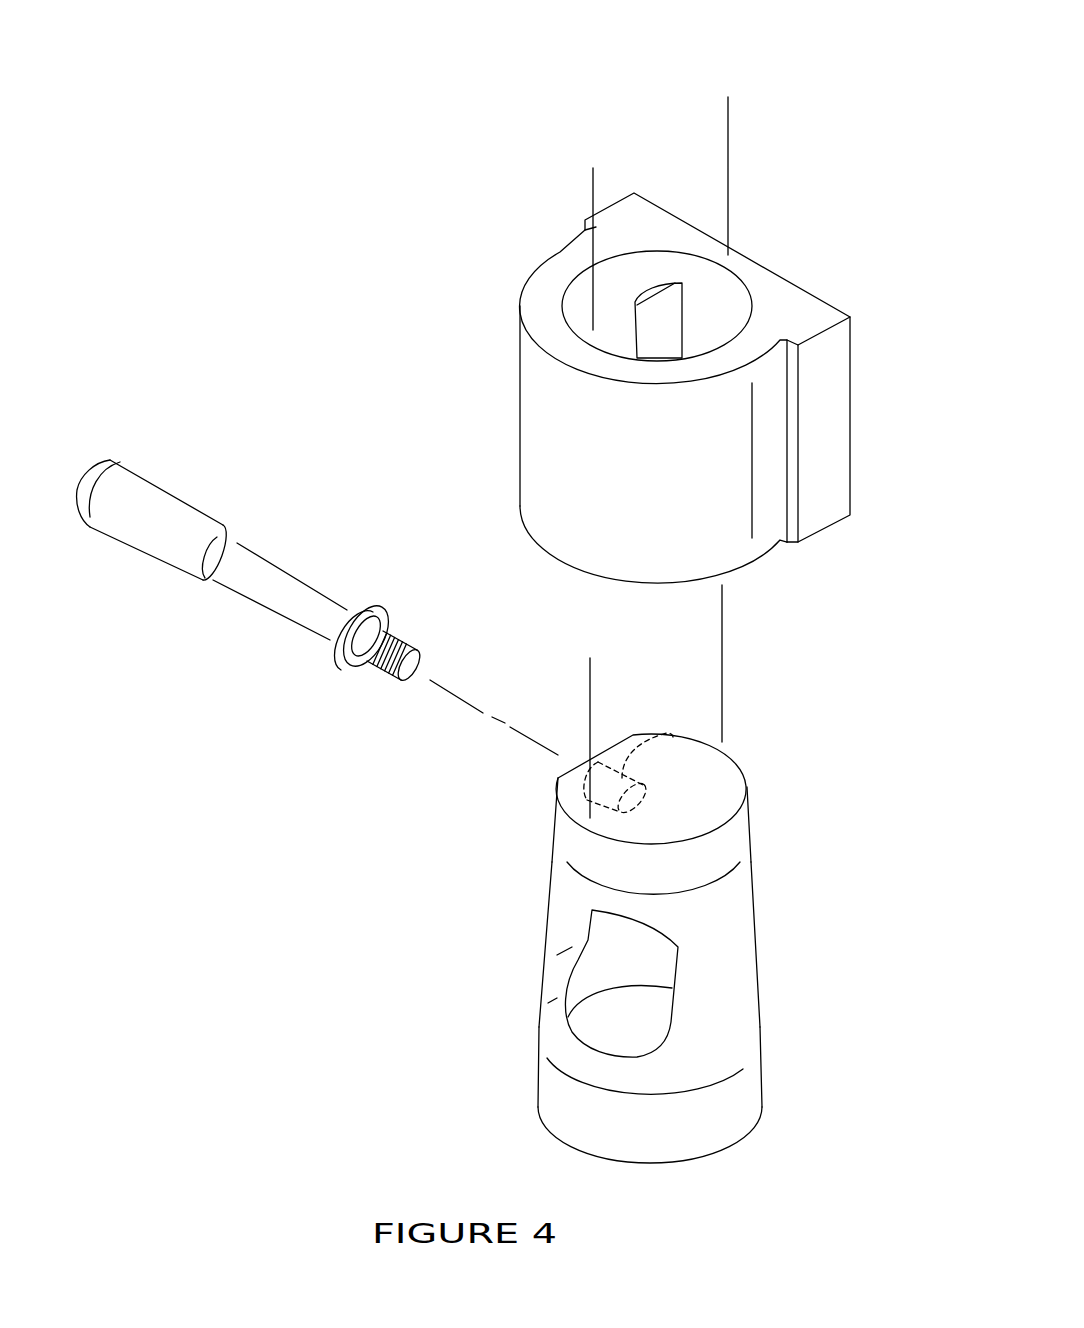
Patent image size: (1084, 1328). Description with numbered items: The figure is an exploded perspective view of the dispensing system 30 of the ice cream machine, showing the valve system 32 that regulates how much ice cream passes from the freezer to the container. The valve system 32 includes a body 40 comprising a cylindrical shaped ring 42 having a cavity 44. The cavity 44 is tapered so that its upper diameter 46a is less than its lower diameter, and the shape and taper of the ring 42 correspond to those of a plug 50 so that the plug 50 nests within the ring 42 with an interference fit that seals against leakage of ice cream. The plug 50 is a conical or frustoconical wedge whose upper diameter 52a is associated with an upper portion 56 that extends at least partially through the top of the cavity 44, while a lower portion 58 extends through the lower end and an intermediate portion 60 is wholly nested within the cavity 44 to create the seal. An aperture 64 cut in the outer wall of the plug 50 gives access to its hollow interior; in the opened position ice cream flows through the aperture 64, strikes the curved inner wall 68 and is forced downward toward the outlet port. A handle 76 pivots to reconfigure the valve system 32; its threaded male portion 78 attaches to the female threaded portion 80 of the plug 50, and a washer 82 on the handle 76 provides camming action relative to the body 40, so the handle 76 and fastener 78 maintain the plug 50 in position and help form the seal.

The dispensing system 30 is at (788, 95).
The valve system 32 is at (770, 208).
The body 40 is at (777, 545).
The ring 42 is at (555, 267).
The cavity 44 is at (645, 280).
The upper diameter 46a is at (727, 110).
The plug 50 is at (755, 953).
The upper diameter 52a is at (722, 598).
The upper portion 56 is at (753, 838).
The lower portion 58 is at (767, 1030).
The intermediate portion 60 is at (765, 898).
The aperture 64 is at (597, 983).
The curved inner wall 68 is at (639, 962).
The handle 76 is at (147, 472).
The threaded male portion 78 is at (402, 645).
The female threaded portion 80 is at (673, 737).
The washer 82 is at (368, 608).